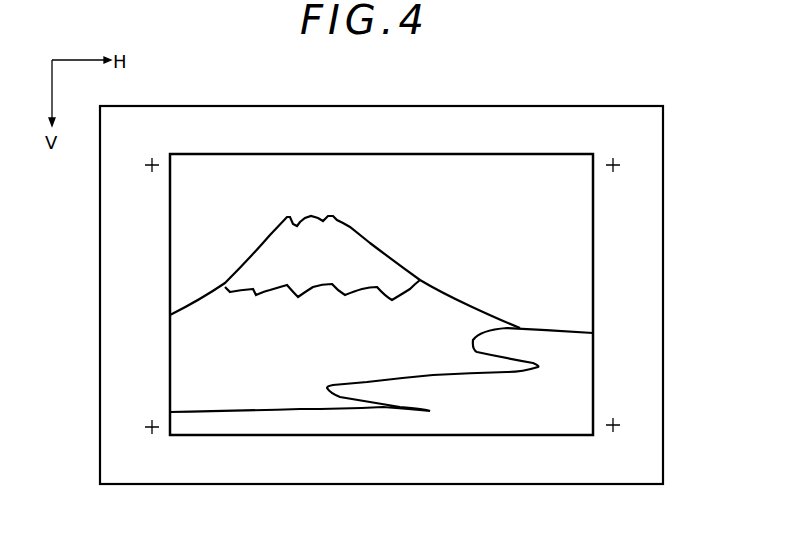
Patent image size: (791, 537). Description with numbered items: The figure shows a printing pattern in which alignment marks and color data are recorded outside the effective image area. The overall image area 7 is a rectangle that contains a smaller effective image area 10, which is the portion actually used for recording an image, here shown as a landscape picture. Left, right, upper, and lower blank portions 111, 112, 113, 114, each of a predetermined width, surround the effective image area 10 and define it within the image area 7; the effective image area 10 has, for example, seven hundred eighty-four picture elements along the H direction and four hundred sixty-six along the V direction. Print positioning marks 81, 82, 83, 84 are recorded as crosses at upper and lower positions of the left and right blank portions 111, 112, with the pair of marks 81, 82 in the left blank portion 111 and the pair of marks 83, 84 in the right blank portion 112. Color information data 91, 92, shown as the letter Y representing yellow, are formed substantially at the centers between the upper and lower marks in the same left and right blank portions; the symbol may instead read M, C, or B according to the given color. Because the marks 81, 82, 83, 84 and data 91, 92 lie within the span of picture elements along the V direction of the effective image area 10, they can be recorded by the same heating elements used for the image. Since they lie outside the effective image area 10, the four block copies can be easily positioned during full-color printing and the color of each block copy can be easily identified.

The image area 7 is at (452, 98).
The effective image area 10 is at (480, 160).
The print positioning mark 81 is at (150, 165).
The print positioning mark 82 is at (147, 427).
The print positioning mark 83 is at (612, 160).
The print positioning mark 84 is at (618, 426).
The color information data 91 is at (145, 297).
The color information data 92 is at (617, 300).
The left blank portion 111 is at (113, 240).
The right blank portion 112 is at (665, 210).
The upper blank portion 113 is at (300, 115).
The lower blank portion 114 is at (550, 470).